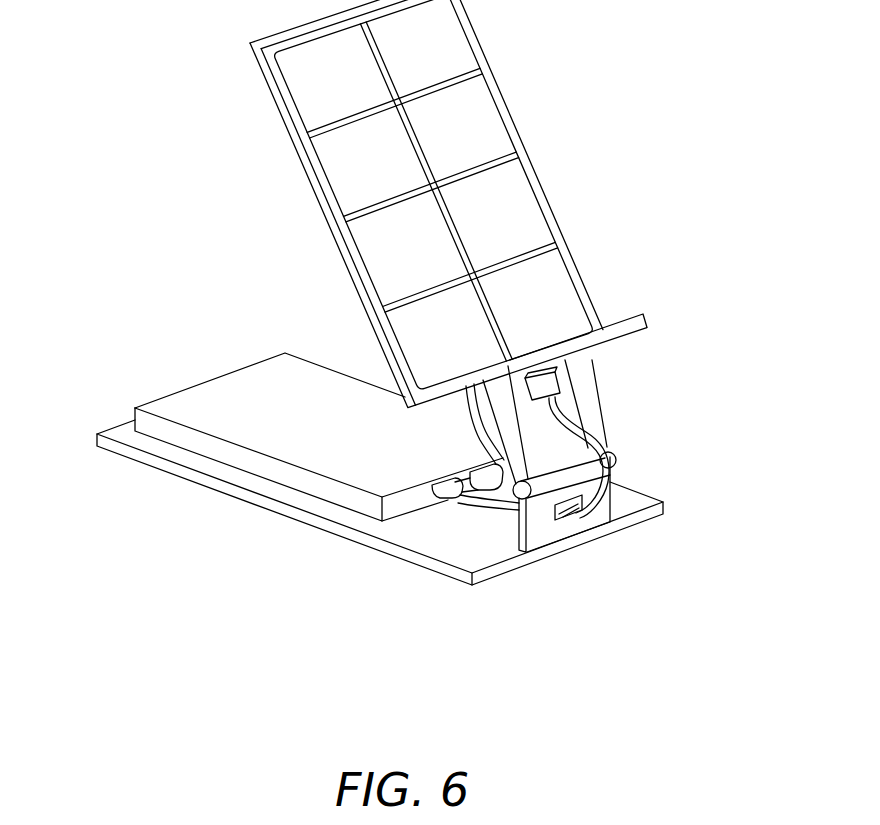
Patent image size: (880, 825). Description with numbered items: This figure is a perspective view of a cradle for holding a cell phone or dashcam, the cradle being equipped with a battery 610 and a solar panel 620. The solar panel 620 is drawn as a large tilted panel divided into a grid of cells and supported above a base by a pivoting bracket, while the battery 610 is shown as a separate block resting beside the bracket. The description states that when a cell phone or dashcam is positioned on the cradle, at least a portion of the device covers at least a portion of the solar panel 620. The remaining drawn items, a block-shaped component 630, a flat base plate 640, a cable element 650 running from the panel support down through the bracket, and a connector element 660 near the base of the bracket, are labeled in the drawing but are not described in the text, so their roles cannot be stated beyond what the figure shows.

The battery 610 is at (454, 204).
The solar panel 620 is at (553, 218).
The battery block 630 is at (185, 388).
The base plate 640 is at (172, 482).
The cable 650 is at (563, 417).
The connector 660 is at (470, 473).